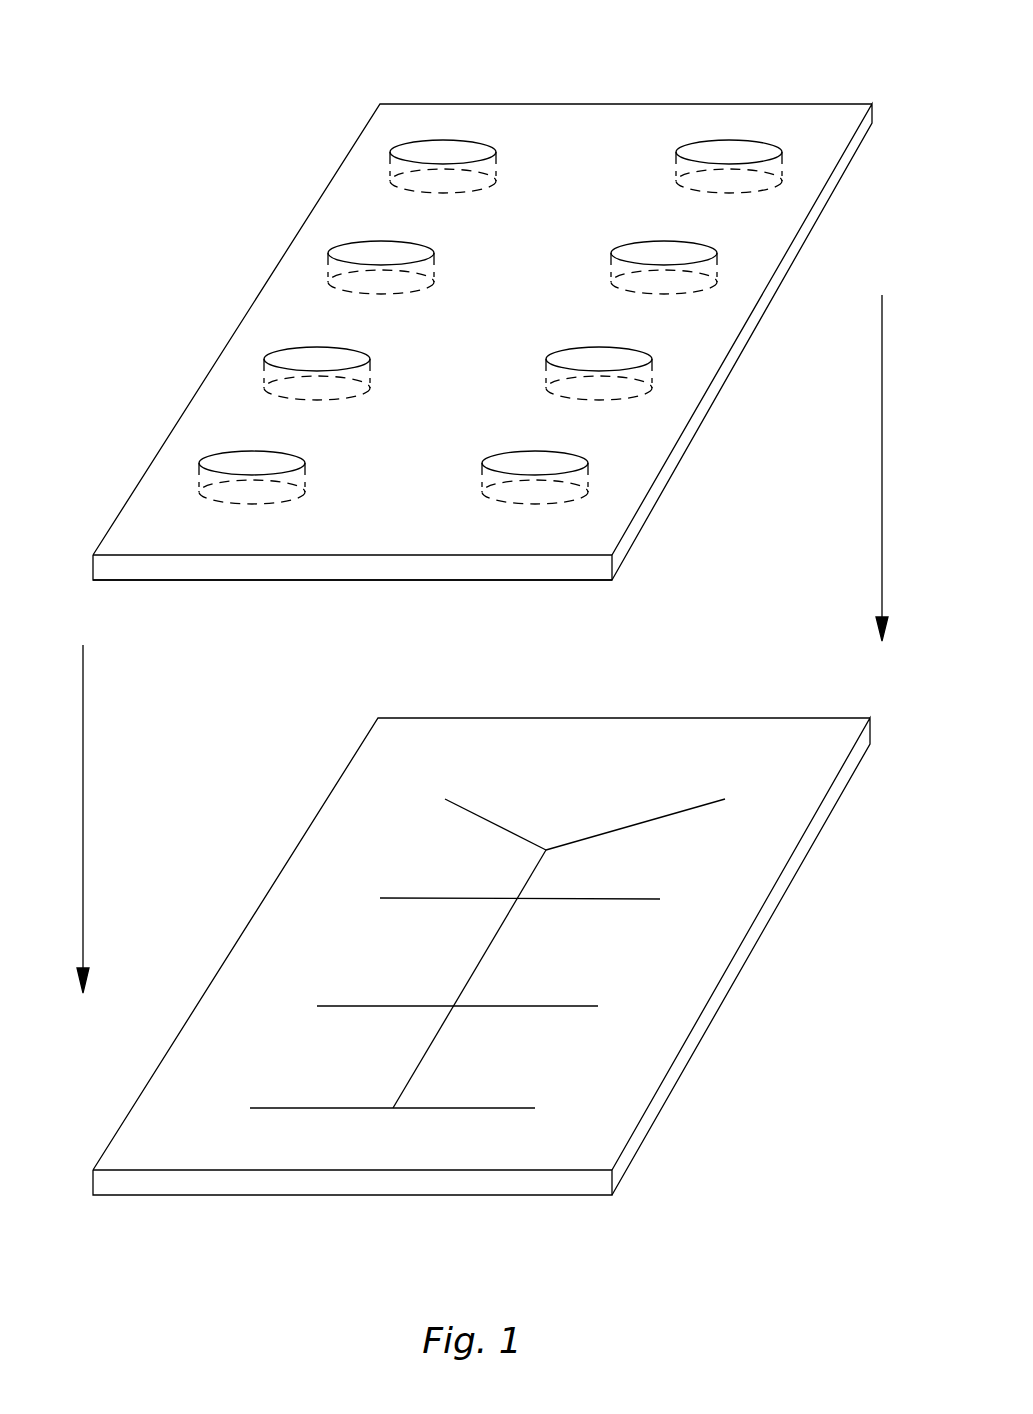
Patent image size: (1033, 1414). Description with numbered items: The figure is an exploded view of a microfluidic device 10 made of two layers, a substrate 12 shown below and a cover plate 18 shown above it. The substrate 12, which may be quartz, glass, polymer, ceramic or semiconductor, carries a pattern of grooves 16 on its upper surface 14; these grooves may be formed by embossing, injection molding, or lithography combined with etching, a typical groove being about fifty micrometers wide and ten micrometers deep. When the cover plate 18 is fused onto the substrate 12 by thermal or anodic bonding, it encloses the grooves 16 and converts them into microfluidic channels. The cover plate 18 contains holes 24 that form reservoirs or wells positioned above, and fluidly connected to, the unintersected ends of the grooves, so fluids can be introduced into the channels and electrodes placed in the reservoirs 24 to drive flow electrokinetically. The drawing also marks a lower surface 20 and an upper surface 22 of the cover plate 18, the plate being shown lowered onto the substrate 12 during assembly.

The microfluidic device 10 is at (232, 90).
The substrate 12 is at (485, 1001).
The upper surface 14 is at (720, 832).
The pattern of grooves 16 is at (272, 1097).
The cover plate 18 is at (482, 323).
The bottom surface of mold plate 20 is at (225, 580).
The top surface of mold plate 22 is at (607, 133).
The holes 24 is at (390, 152).